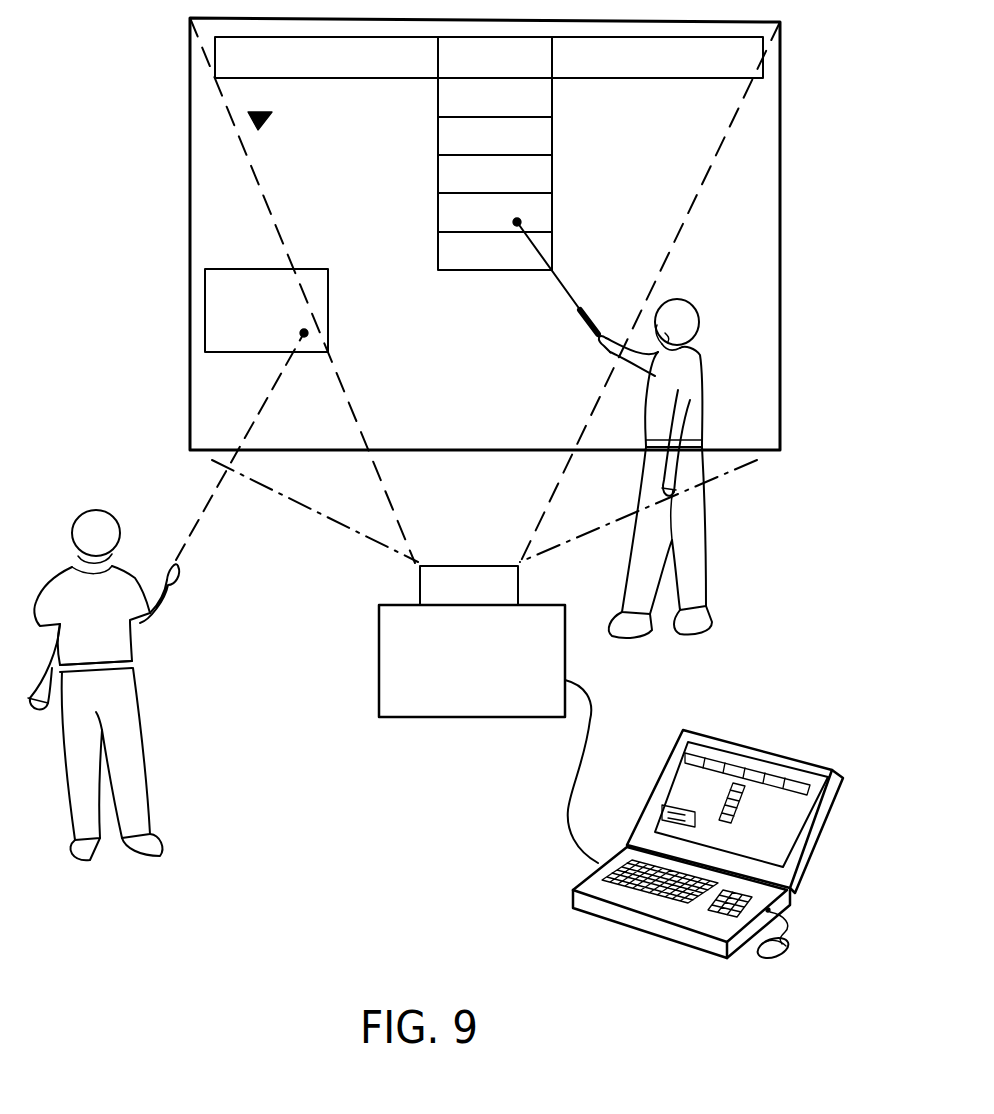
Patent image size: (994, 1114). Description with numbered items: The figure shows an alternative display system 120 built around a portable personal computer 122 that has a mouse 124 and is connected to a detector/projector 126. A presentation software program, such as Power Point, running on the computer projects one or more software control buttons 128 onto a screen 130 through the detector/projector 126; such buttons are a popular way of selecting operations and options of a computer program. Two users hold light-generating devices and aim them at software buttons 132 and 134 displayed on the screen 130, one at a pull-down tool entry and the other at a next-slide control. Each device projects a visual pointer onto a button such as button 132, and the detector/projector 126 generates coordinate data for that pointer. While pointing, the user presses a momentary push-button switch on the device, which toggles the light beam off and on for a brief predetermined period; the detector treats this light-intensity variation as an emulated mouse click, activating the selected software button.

The display system 120 is at (404, 815).
The portable personal computer 122 is at (797, 758).
The mouse 124 is at (788, 952).
The detector/projector 126 is at (379, 683).
The software control button 128 is at (252, 122).
The screen 130 is at (780, 165).
The software button 132 is at (552, 207).
The software button 134 is at (328, 318).